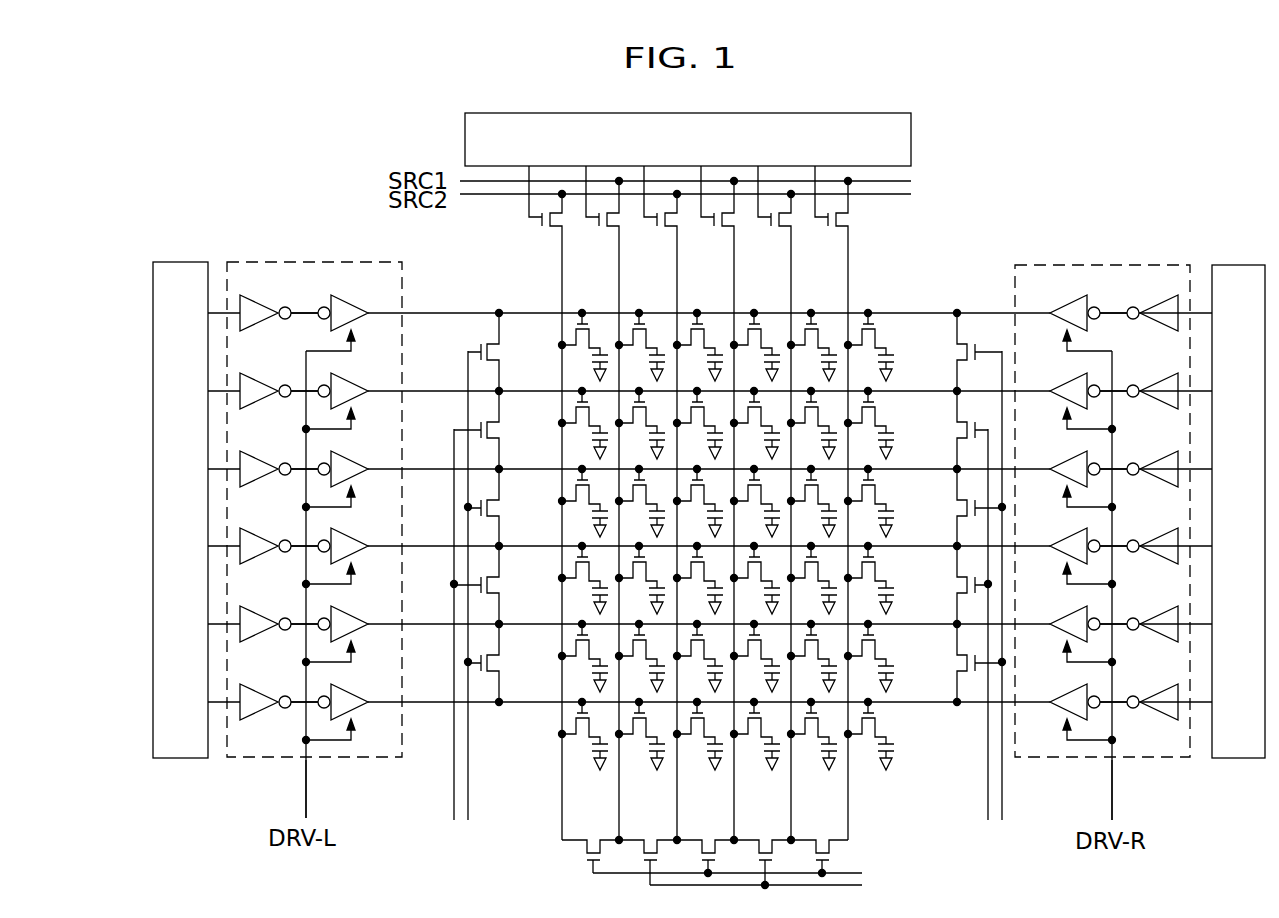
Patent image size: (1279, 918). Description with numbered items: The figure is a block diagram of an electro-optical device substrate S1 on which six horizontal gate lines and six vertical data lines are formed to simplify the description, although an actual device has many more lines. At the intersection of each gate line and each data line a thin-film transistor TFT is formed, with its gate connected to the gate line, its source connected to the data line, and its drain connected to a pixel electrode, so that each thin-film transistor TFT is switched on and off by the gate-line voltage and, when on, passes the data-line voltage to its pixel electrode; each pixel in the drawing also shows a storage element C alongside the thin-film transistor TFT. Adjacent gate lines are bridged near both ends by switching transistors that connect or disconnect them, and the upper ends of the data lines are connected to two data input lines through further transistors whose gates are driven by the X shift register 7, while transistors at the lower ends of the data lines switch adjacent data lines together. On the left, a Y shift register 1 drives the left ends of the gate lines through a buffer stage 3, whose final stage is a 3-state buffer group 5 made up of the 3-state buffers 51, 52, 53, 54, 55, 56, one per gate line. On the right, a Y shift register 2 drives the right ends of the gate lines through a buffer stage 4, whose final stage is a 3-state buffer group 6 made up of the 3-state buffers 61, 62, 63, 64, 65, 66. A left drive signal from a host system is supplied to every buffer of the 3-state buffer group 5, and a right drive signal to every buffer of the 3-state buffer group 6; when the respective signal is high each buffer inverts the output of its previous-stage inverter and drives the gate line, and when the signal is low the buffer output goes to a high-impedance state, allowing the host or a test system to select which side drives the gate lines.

The Y shift register 1 is at (185, 262).
The Y shift register 2 is at (1245, 265).
The buffer stage 3 is at (303, 262).
The buffer stage 4 is at (1130, 263).
The 3-state buffer group 5 is at (375, 748).
The 3-state buffer group 6 is at (1062, 748).
The X shift register 7 is at (911, 148).
The 3-state buffer 51 is at (350, 306).
The 3-state buffer 52 is at (350, 384).
The 3-state buffer 53 is at (350, 462).
The 3-state buffer 54 is at (350, 539).
The 3-state buffer 55 is at (350, 617).
The 3-state buffer 56 is at (350, 695).
The 3-state buffer 61 is at (1060, 307).
The 3-state buffer 62 is at (1060, 385).
The 3-state buffer 63 is at (1060, 463).
The 3-state buffer 64 is at (1060, 540).
The 3-state buffer 65 is at (1060, 618).
The 3-state buffer 66 is at (1060, 696).
The electro-optical device substrate S1 is at (918, 253).
The thin-film transistor TFT is at (870, 657).
The pixel capacitor C is at (838, 762).